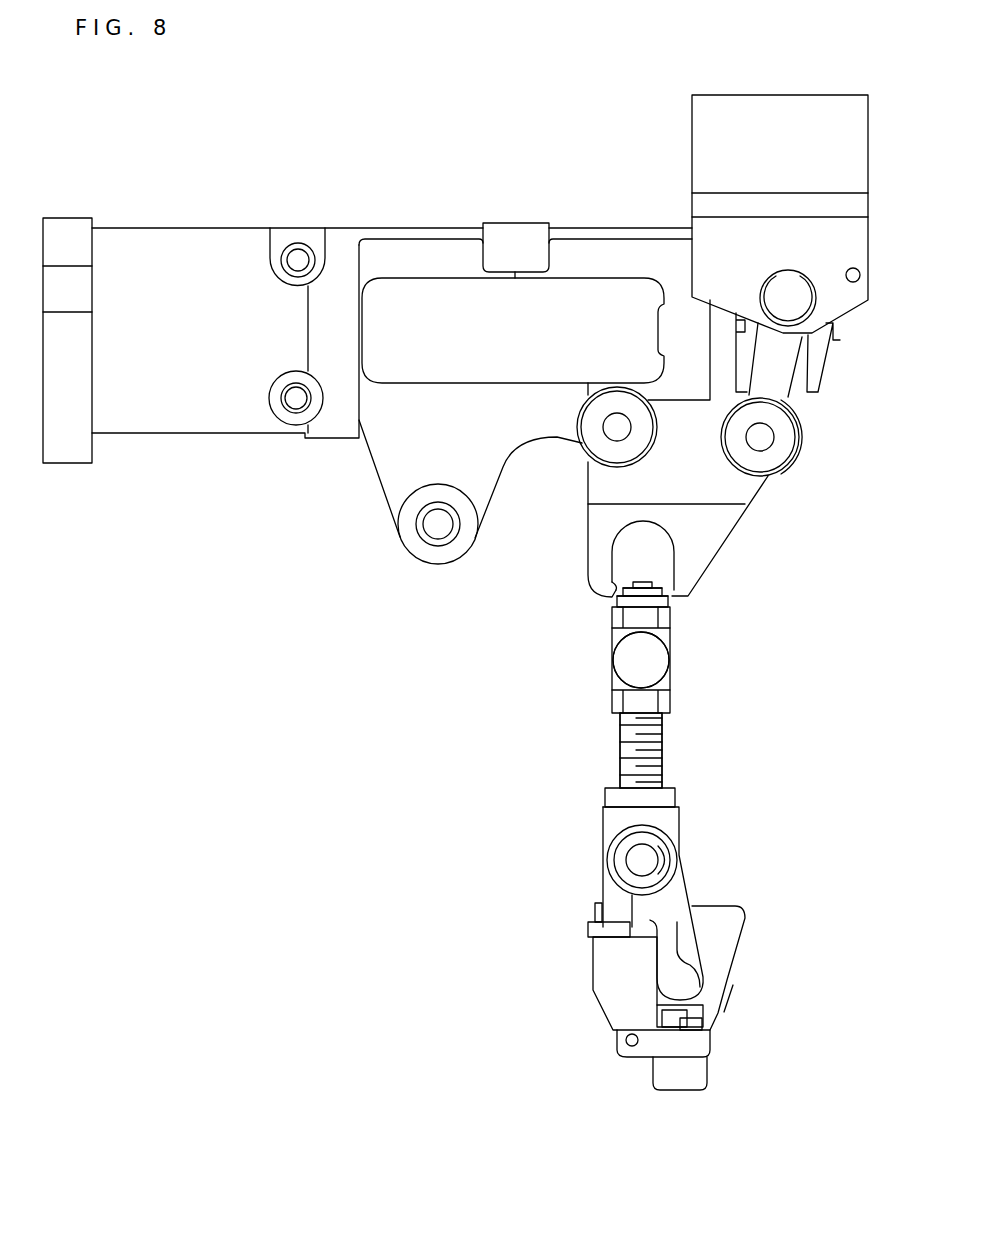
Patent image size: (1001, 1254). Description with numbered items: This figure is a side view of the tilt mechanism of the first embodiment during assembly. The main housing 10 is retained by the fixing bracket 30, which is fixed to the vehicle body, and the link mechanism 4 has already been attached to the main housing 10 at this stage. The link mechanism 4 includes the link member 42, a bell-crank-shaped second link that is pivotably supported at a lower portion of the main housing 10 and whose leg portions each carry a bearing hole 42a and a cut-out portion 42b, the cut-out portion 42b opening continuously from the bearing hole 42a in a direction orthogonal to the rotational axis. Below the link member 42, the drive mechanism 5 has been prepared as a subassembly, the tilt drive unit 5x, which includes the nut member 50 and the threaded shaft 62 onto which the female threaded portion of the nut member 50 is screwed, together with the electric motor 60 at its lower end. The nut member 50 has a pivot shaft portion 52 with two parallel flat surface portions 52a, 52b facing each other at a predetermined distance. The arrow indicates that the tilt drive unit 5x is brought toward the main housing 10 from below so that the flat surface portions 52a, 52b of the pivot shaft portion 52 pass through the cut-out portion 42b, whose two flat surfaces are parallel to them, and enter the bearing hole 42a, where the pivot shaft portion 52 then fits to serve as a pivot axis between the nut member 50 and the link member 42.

The main housing 10 is at (163, 246).
The fixing bracket 30 is at (692, 128).
The link mechanism 4 is at (805, 466).
The link member 42 is at (728, 525).
The bearing hole 42a is at (617, 552).
The cut-out portion 42b is at (630, 578).
The nut member 50 is at (597, 633).
The pivot shaft portion 52 is at (653, 660).
The flat surface portion 52a is at (670, 660).
The flat surface portion 52b is at (612, 660).
The threaded shaft 62 is at (625, 750).
The tilt drive unit 5x is at (683, 755).
The drive mechanism 5 is at (668, 898).
The electric motor 60 is at (667, 1075).